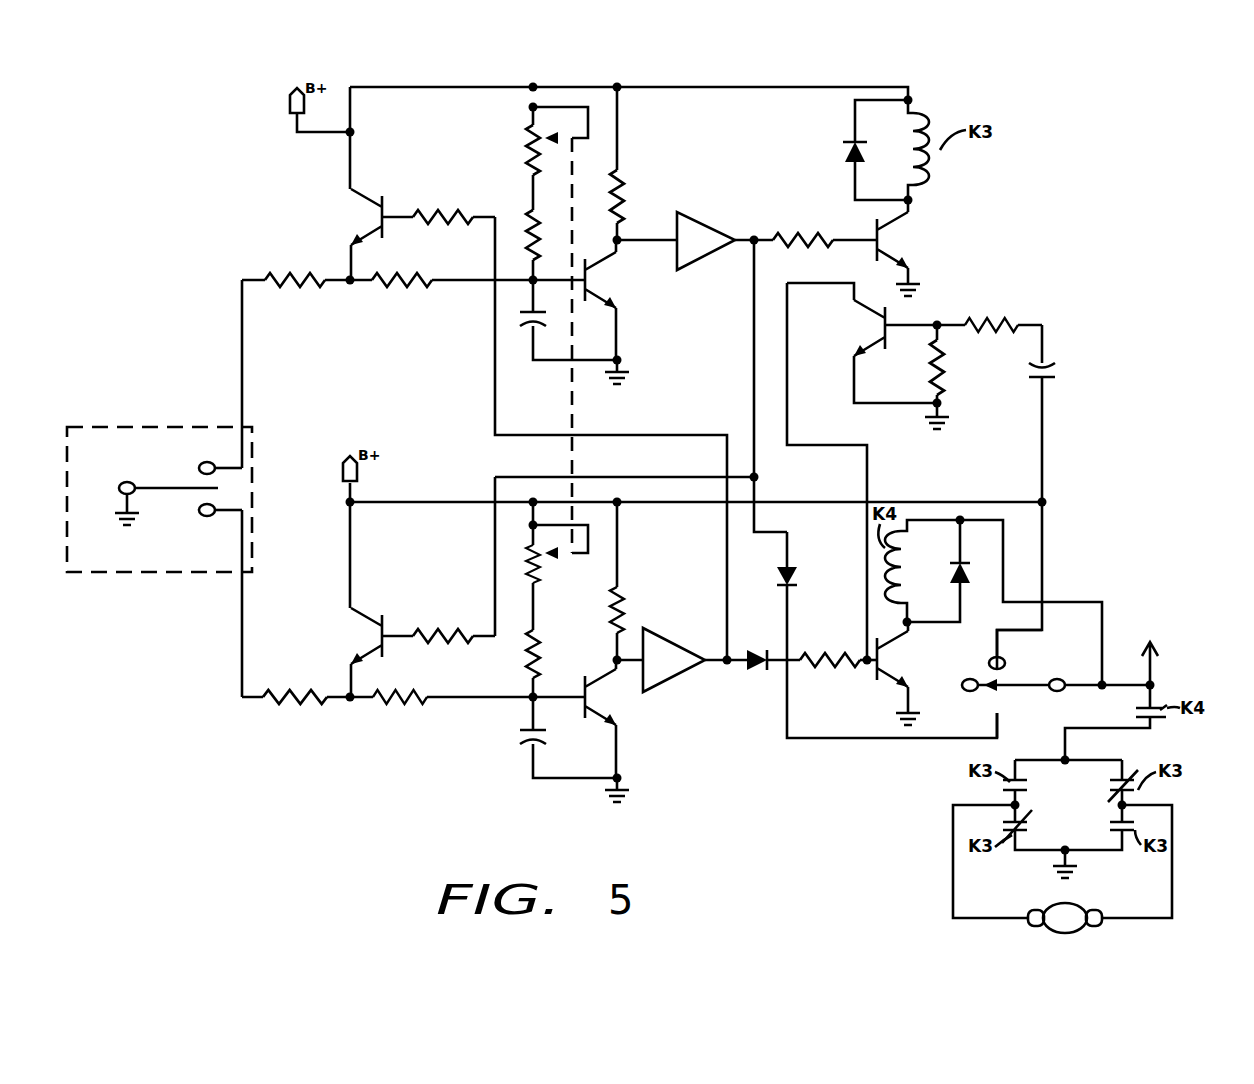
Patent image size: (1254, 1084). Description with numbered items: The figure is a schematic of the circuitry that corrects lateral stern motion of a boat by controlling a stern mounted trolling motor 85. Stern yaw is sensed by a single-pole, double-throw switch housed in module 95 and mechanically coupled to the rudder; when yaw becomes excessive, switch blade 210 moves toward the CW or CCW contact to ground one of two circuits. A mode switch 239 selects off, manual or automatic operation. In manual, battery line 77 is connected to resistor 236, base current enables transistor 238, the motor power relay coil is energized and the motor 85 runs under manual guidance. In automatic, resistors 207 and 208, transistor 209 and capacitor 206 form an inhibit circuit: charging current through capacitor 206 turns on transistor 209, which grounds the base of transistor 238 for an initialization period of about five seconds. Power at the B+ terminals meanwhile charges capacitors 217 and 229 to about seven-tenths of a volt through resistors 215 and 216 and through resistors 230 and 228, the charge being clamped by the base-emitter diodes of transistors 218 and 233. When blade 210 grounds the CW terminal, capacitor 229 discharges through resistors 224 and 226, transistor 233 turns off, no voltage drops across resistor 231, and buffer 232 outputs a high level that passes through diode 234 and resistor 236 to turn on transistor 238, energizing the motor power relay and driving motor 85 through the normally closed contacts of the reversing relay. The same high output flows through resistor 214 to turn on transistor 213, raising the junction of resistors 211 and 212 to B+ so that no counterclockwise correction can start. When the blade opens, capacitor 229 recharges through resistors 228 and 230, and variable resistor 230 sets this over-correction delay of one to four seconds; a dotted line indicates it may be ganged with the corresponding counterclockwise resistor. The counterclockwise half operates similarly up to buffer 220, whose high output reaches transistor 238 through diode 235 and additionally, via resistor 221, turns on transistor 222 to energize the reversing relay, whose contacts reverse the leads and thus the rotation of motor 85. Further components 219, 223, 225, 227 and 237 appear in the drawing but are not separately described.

The module 95 is at (80, 427).
The switch blade 210 is at (158, 488).
The resistor 211 is at (290, 272).
The resistor 212 is at (396, 288).
The transistor 213 is at (375, 215).
The resistor 214 is at (437, 210).
The resistor 215 is at (525, 140).
The resistor 216 is at (525, 232).
The capacitor 217 is at (522, 320).
The transistor 218 is at (604, 282).
The resistor 219 is at (622, 195).
The buffer 220 is at (702, 230).
The resistor 221 is at (800, 240).
The transistor 222 is at (893, 240).
The diode 223 is at (845, 156).
The transistor 209 is at (870, 324).
The resistor 207 is at (1000, 318).
The resistor 208 is at (947, 365).
The capacitor 206 is at (1056, 372).
The resistor 224 is at (291, 705).
The transistor 225 is at (375, 628).
The resistor 226 is at (395, 708).
The resistor 227 is at (440, 628).
The resistor 228 is at (525, 658).
The capacitor 229 is at (520, 738).
The variable resistor 230 is at (562, 566).
The resistor 231 is at (630, 603).
The buffer 232 is at (675, 640).
The transistor 233 is at (604, 705).
The diode 234 is at (756, 672).
The diode 235 is at (795, 578).
The resistor 236 is at (826, 652).
The diode 237 is at (955, 575).
The transistor 238 is at (893, 655).
The switch 239 is at (965, 700).
The battery line 77 is at (1150, 670).
The motor 85 is at (1078, 932).